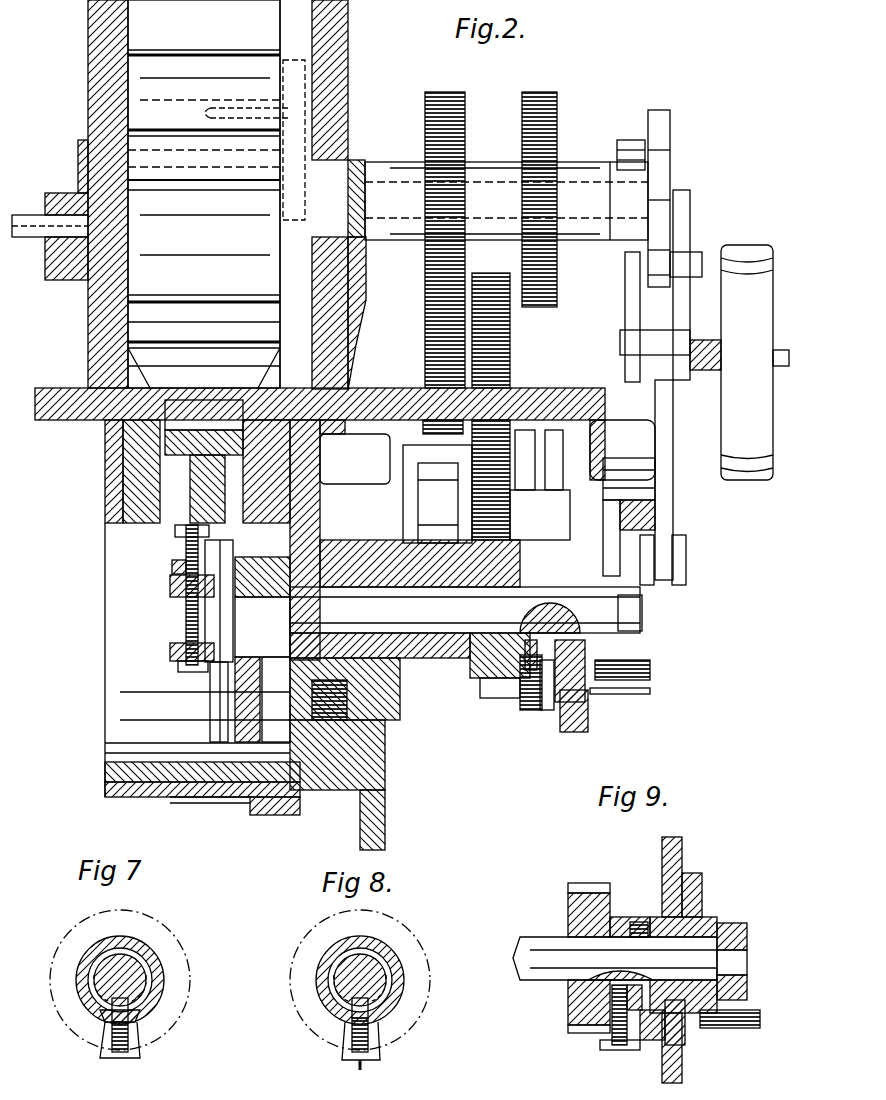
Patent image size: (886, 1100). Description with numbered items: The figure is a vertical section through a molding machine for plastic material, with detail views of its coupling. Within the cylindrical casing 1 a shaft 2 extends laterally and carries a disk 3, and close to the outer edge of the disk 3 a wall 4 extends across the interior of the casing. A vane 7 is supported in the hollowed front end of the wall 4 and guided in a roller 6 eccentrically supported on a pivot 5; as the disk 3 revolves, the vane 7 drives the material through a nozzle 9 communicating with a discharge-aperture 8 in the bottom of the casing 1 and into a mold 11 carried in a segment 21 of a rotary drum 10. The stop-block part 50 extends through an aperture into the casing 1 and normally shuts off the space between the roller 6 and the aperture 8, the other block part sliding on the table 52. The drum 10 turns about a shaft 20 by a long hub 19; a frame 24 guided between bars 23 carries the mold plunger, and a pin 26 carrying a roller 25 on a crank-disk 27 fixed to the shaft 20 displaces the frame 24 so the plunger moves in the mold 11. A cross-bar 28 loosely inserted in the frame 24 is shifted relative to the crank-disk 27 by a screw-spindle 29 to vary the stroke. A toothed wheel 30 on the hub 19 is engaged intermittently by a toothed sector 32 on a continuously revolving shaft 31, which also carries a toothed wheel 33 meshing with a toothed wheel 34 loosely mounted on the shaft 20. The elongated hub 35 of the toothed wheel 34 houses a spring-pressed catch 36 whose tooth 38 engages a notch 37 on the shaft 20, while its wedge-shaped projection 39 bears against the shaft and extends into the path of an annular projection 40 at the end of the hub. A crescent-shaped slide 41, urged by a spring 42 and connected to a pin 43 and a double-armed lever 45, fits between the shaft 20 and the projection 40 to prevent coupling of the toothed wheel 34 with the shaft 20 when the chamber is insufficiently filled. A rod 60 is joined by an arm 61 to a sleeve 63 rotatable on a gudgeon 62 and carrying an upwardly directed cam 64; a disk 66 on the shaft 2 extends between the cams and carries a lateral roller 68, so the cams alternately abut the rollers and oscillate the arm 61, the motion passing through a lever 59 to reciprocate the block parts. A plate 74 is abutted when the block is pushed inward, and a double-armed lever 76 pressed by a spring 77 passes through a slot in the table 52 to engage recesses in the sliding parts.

In FIG. 2, the cylindrical casing 1 is at (88, 78).
In FIG. 2, the shaft 2 is at (374, 172).
In FIG. 2, the disk 3 is at (290, 205).
In FIG. 2, the wall 4 is at (209, 194).
In FIG. 2, the pivot 5 is at (66, 240).
In FIG. 2, the roller 6 is at (204, 246).
In FIG. 2, the vane 7 is at (204, 163).
In FIG. 2, the discharge-aperture 8 is at (204, 370).
In FIG. 2, the nozzle 9 is at (232, 408).
In FIG. 2, the rotary drum 10 is at (116, 710).
In FIG. 2, the mold 11 is at (227, 471).
In FIG. 2, the long hub 19 is at (348, 575).
In FIG. 2, the shaft 20 is at (655, 605).
In FIG. 7, the shaft 20 is at (150, 966).
In FIG. 8, the shaft 20 is at (365, 966).
In FIG. 9, the shaft 20 is at (522, 943).
In FIG. 2, the segment 21 is at (130, 448).
In FIG. 2, the bars 23 is at (208, 705).
In FIG. 2, the frame 24 is at (186, 556).
In FIG. 2, the roller 25 is at (186, 560).
In FIG. 2, the pin 26 is at (262, 607).
In FIG. 2, the crank-disk 27 is at (262, 699).
In FIG. 2, the cross-bar 28 is at (170, 594).
In FIG. 2, the screw-spindle 29 is at (172, 652).
In FIG. 2, the toothed wheel 30 is at (440, 680).
In FIG. 2, the shaft 31 is at (624, 540).
In FIG. 2, the toothed sector 32 is at (437, 494).
In FIG. 2, the toothed wheel 33 is at (438, 504).
In FIG. 2, the toothed wheel 34 is at (488, 576).
In FIG. 7, the toothed wheel 34 is at (78, 932).
In FIG. 8, the toothed wheel 34 is at (318, 936).
In FIG. 9, the toothed wheel 34 is at (590, 893).
In FIG. 2, the elongated hub 35 is at (545, 575).
In FIG. 7, the elongated hub 35 is at (122, 960).
In FIG. 8, the elongated hub 35 is at (404, 984).
In FIG. 9, the elongated hub 35 is at (630, 911).
In FIG. 7, the spring-pressed catch 36 is at (110, 1050).
In FIG. 8, the spring-pressed catch 36 is at (366, 1065).
In FIG. 9, the spring-pressed catch 36 is at (607, 1053).
In FIG. 2, the notch 37 is at (570, 650).
In FIG. 7, the notch 37 is at (104, 1004).
In FIG. 9, the notch 37 is at (586, 986).
In FIG. 2, the engaging tooth 38 is at (545, 640).
In FIG. 7, the engaging tooth 38 is at (146, 1002).
In FIG. 8, the engaging tooth 38 is at (330, 1018).
In FIG. 9, the engaging tooth 38 is at (610, 1000).
In FIG. 2, the wedge-shaped projection 39 is at (533, 700).
In FIG. 7, the wedge-shaped projection 39 is at (130, 1020).
In FIG. 8, the wedge-shaped projection 39 is at (384, 1020).
In FIG. 9, the wedge-shaped projection 39 is at (607, 994).
In FIG. 9, the annular projection 40 is at (652, 915).
In FIG. 7, the crescent-shaped slide 41 is at (88, 980).
In FIG. 8, the crescent-shaped slide 41 is at (330, 985).
In FIG. 9, the crescent-shaped slide 41 is at (661, 955).
In FIG. 2, the spring 42 is at (612, 668).
In FIG. 9, the spring 42 is at (706, 1038).
In FIG. 2, the pin 43 is at (640, 692).
In FIG. 2, the double-armed lever 45 is at (588, 700).
In FIG. 9, the double-armed lever 45 is at (655, 1058).
In FIG. 2, the stop-block part 50 is at (204, 332).
In FIG. 2, the table 52 is at (600, 412).
In FIG. 2, the lever 59 is at (640, 482).
In FIG. 2, the rod 60 is at (686, 563).
In FIG. 2, the arm 61 is at (673, 426).
In FIG. 2, the gudgeon 62 is at (705, 368).
In FIG. 2, the sleeve 63 is at (642, 350).
In FIG. 2, the cam 64 is at (690, 316).
In FIG. 2, the disk 66 is at (672, 170).
In FIG. 2, the lateral roller 68 is at (630, 140).
In FIG. 2, the plate 74 is at (366, 400).
In FIG. 2, the double-armed lever 76 is at (600, 446).
In FIG. 2, the spring 77 is at (540, 490).